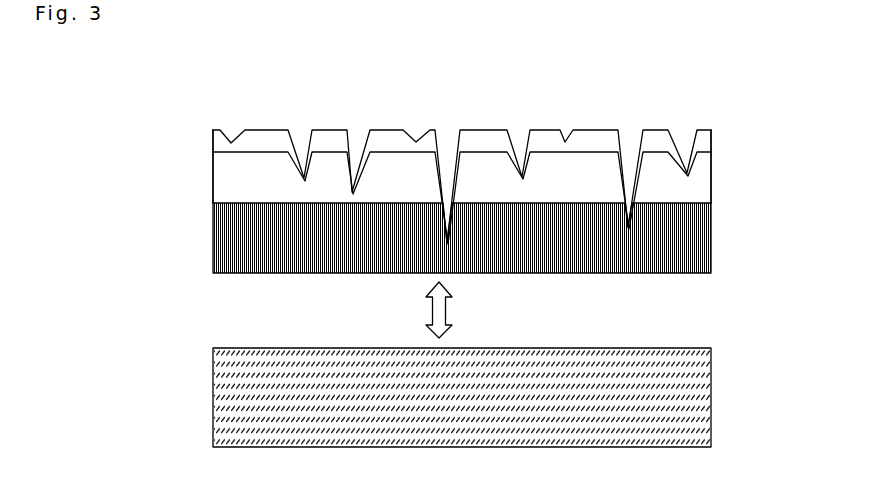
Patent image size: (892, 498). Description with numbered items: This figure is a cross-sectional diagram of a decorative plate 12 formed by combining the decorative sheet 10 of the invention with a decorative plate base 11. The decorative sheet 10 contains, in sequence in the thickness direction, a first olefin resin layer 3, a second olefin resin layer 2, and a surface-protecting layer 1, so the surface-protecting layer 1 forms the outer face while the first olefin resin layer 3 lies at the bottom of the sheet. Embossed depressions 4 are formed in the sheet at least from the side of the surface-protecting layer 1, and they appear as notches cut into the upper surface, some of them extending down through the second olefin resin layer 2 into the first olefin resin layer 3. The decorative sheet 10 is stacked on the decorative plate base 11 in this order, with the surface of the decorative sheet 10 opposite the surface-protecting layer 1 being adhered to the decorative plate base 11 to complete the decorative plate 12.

The surface-protecting layer 1 is at (712, 130).
The second olefin resin layer 2 is at (712, 160).
The first olefin resin layer 3 is at (712, 217).
The embossed depressions 4 is at (300, 132).
The decorative sheet 10 is at (202, 131).
The decorative plate base 11 is at (202, 348).
The decorative plate 12 is at (127, 131).